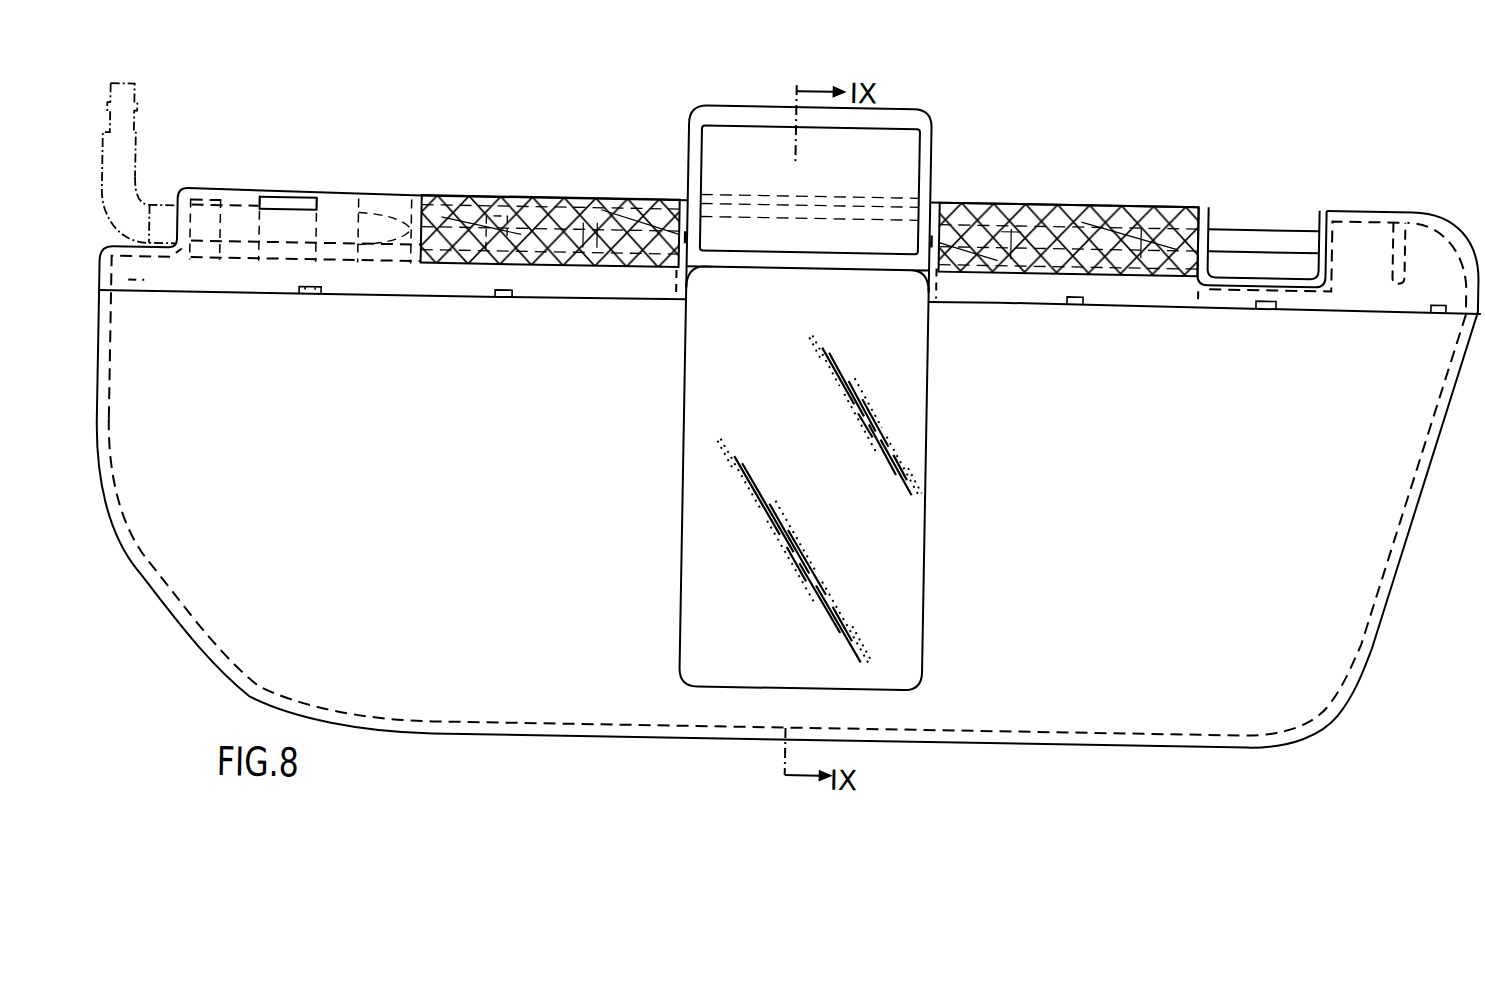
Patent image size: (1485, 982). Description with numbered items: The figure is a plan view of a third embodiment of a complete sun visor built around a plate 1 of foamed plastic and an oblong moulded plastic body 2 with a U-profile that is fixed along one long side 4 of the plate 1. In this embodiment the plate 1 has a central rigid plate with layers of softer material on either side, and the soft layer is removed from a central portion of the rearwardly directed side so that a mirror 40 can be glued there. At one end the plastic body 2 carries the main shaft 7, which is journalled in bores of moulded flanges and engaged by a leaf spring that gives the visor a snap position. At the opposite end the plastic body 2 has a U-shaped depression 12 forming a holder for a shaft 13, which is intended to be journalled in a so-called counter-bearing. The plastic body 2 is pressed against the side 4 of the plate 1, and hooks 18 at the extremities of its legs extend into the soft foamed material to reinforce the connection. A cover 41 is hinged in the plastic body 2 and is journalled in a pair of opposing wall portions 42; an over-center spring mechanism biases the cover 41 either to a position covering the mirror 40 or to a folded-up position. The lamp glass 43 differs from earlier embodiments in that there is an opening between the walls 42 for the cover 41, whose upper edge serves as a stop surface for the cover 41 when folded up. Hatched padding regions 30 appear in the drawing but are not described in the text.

The plate 1 is at (168, 601).
The plastic body 2 is at (350, 205).
The long side of the plate 4 is at (558, 293).
The main shaft 7 is at (133, 178).
The U-shaped depression 12 is at (1203, 212).
The shaft 13 is at (1276, 239).
The hooks 18 is at (317, 306).
The padding 30 is at (966, 190).
The mirror 40 is at (939, 379).
The cover 41 is at (925, 156).
The wall portions 42 is at (683, 239).
The lamp glass 43 is at (541, 200).